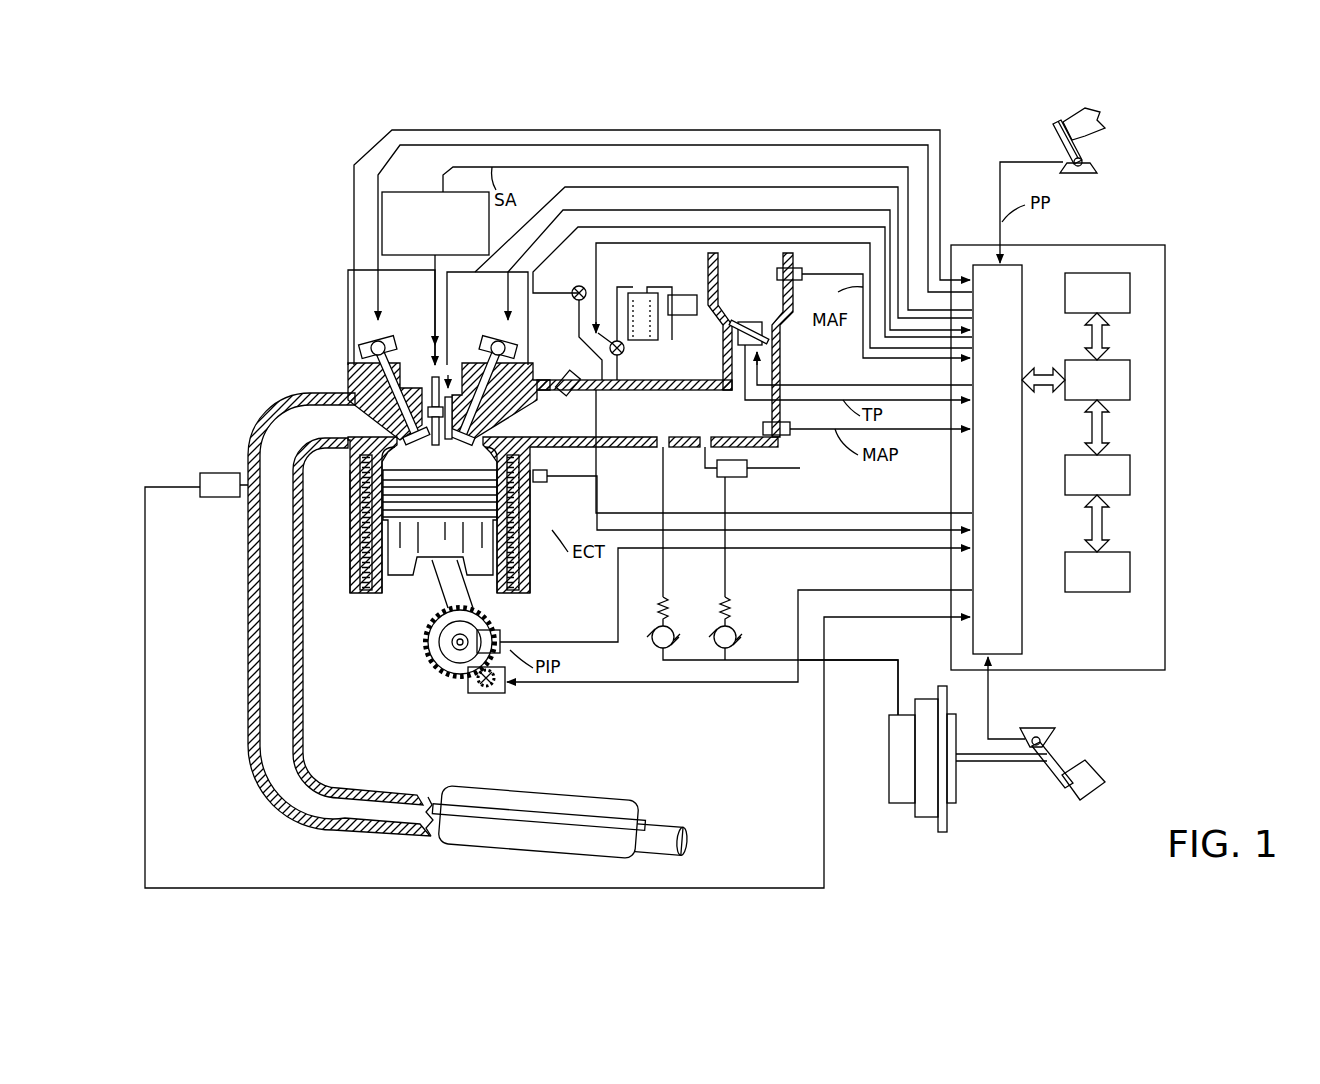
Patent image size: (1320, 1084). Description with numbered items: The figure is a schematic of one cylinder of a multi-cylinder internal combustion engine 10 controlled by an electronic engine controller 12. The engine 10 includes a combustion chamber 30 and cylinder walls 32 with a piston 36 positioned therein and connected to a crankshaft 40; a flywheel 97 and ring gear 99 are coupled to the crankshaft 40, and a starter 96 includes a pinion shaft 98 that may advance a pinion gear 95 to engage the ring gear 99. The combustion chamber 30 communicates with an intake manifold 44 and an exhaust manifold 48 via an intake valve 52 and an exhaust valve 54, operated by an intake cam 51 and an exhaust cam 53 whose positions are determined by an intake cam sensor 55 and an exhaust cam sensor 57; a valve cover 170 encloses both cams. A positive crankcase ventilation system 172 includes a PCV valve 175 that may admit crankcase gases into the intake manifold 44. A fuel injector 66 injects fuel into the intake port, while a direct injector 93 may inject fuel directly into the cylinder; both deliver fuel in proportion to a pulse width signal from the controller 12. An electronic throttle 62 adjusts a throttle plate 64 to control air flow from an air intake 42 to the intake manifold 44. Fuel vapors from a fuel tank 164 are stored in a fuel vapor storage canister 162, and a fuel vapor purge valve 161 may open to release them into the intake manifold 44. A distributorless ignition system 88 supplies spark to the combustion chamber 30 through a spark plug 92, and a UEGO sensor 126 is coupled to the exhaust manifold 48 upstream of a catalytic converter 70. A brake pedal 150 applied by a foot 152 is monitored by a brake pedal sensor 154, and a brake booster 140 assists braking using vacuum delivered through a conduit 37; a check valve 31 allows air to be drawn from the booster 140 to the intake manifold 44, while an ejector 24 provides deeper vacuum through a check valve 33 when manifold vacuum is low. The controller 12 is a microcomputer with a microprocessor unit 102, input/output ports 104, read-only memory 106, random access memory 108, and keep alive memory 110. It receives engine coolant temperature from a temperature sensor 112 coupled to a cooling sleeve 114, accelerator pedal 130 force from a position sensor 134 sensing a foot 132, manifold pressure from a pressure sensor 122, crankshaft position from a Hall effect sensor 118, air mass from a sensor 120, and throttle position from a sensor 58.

The internal combustion engine 10 is at (290, 322).
The electronic engine controller 12 is at (1160, 246).
The ejector 24 is at (755, 478).
The combustion chamber 30 is at (437, 452).
The check valve 31 is at (772, 581).
The cylinder walls 32 is at (387, 590).
The check valve 33 is at (734, 626).
The piston 36 is at (423, 548).
The passage or conduit 37 is at (896, 663).
The crankshaft 40 is at (455, 663).
The air intake 42 is at (764, 301).
The intake manifold 44 is at (656, 424).
The exhaust manifold 48 is at (331, 433).
The intake cam 51 is at (497, 333).
The intake valve 52 is at (482, 423).
The exhaust cam 53 is at (388, 330).
The exhaust valve 54 is at (356, 393).
The intake cam sensor 55 is at (515, 345).
The exhaust cam sensor 57 is at (368, 342).
The throttle position sensor 58 is at (723, 352).
The electronic throttle 62 is at (740, 322).
The throttle plate 64 is at (730, 330).
The fuel injector 66 is at (566, 372).
The catalytic converter 70 is at (448, 790).
The distributorless ignition system 88 is at (402, 192).
The spark plug 92 is at (431, 385).
The direct injector 93 is at (448, 392).
The pinion gear 95 is at (498, 695).
The starter 96 is at (505, 690).
The flywheel 97 is at (438, 640).
The pinion shaft 98 is at (482, 692).
The ring gear 99 is at (462, 679).
The microprocessor unit 102 is at (1131, 381).
The input/output ports 104 is at (1024, 275).
The read-only memory 106 is at (1131, 293).
The random access memory 108 is at (1131, 471).
The keep alive memory 110 is at (1131, 569).
The temperature sensor 112 is at (547, 482).
The cooling sleeve 114 is at (522, 550).
The Hall effect sensor 118 is at (500, 636).
The air mass sensor 120 is at (790, 270).
The pressure sensor 122 is at (763, 430).
The UEGO sensor 126 is at (200, 476).
The accelerator pedal 130 is at (1058, 140).
The foot 132 is at (1105, 128).
The position sensor 134 is at (1094, 168).
The brake booster 140 is at (889, 806).
The brake pedal 150 is at (1052, 783).
The foot 152 is at (1086, 760).
The brake pedal sensor 154 is at (1024, 740).
The fuel vapor purge valve 161 is at (623, 354).
The fuel vapor storage canister 162 is at (652, 330).
The fuel tank 164 is at (683, 295).
The valve cover 170 is at (348, 276).
The positive crankcase ventilation system 172 is at (606, 267).
The PCV valve 175 is at (576, 287).